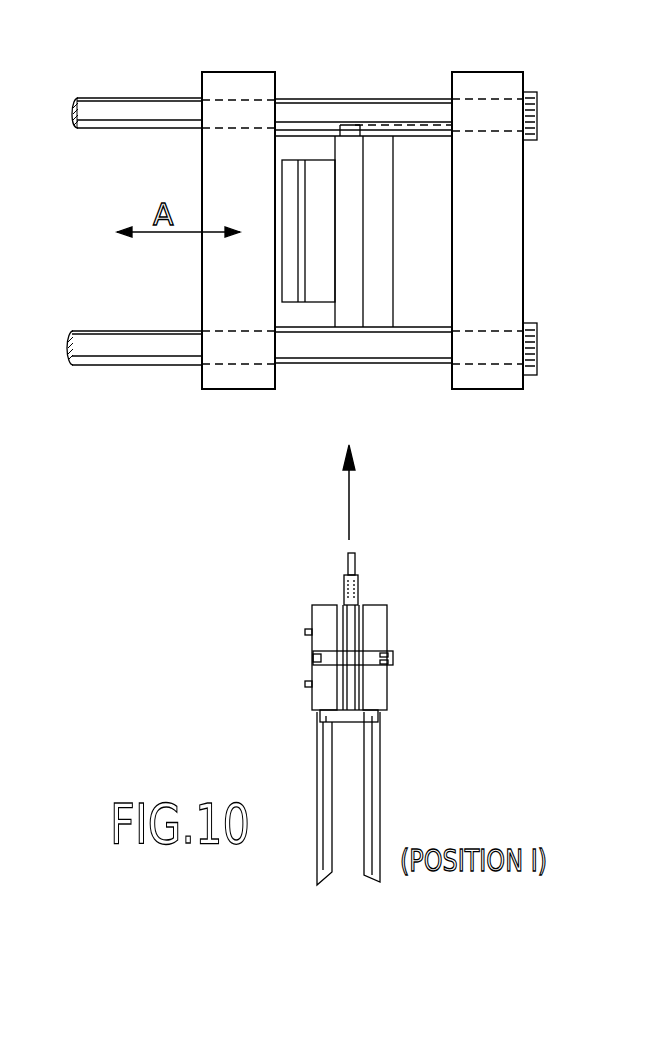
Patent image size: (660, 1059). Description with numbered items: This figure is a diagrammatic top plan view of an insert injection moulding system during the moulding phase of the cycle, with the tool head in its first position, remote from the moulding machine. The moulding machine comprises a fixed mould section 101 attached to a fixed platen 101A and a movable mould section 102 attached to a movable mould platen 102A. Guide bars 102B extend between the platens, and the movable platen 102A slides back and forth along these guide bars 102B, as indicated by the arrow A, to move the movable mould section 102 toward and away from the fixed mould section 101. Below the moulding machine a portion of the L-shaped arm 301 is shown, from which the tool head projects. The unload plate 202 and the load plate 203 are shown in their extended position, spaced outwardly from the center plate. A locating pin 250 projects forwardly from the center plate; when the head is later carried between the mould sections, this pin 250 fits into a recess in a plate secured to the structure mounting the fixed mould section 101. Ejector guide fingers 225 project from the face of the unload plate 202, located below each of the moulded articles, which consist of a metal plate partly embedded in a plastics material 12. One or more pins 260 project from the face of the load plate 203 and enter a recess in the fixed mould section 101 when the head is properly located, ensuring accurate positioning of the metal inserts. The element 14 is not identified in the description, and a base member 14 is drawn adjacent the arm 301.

The fixed mould section 101 is at (415, 313).
The fixed platen 101A is at (503, 288).
The movable mould section 102 is at (372, 310).
The movable mould platen 102A is at (230, 308).
The guide bars 102B is at (137, 107).
The plastics material 12 is at (320, 698).
The base member 14 is at (388, 690).
The unload plate 202 is at (320, 613).
The load plate 203 is at (378, 632).
The ejector guide fingers 225 is at (308, 632).
The locating pin 250 is at (355, 565).
The pins 260 is at (393, 655).
The L-shaped arm 301 is at (372, 800).